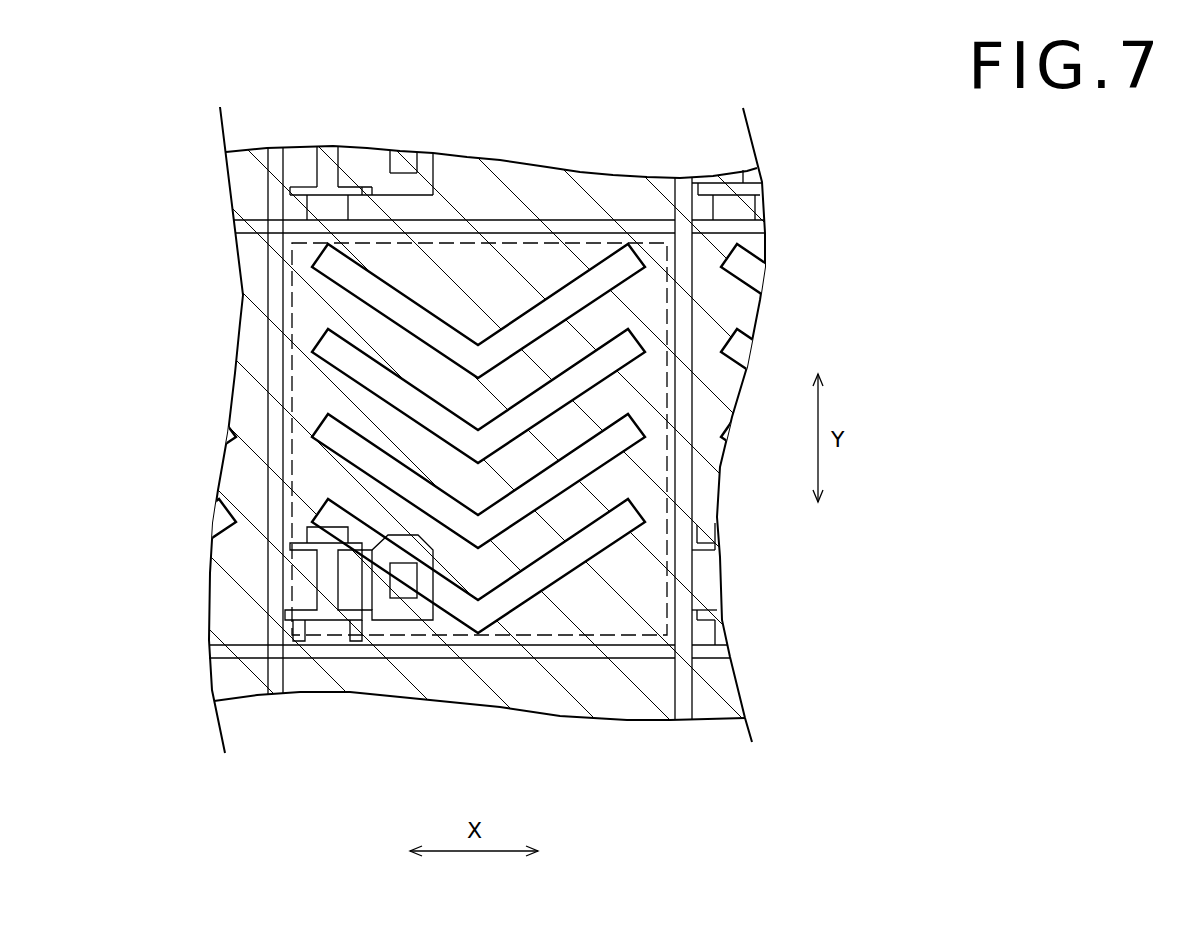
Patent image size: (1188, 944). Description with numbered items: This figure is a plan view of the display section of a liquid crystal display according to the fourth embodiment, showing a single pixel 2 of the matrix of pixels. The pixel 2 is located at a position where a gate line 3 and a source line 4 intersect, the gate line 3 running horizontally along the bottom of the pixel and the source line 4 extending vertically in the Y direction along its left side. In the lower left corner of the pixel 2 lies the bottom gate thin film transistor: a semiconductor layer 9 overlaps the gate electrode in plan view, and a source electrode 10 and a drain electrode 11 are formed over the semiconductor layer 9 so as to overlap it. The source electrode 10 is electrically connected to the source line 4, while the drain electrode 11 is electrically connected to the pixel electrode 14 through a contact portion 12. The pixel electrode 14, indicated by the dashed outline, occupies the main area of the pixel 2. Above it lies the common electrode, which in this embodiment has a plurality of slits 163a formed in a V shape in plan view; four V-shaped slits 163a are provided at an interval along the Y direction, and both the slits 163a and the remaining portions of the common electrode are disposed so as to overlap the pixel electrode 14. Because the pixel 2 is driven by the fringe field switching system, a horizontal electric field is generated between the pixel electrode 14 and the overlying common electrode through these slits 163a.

The pixel 2 is at (538, 617).
The gate line 3 is at (468, 648).
The source line 4 is at (270, 690).
The semiconductor layer 9 is at (325, 603).
The source electrode 10 is at (300, 597).
The drain electrode 11 is at (362, 593).
The contact portion 12 is at (403, 587).
The pixel electrode 14 is at (647, 237).
The slit 163a is at (365, 202).